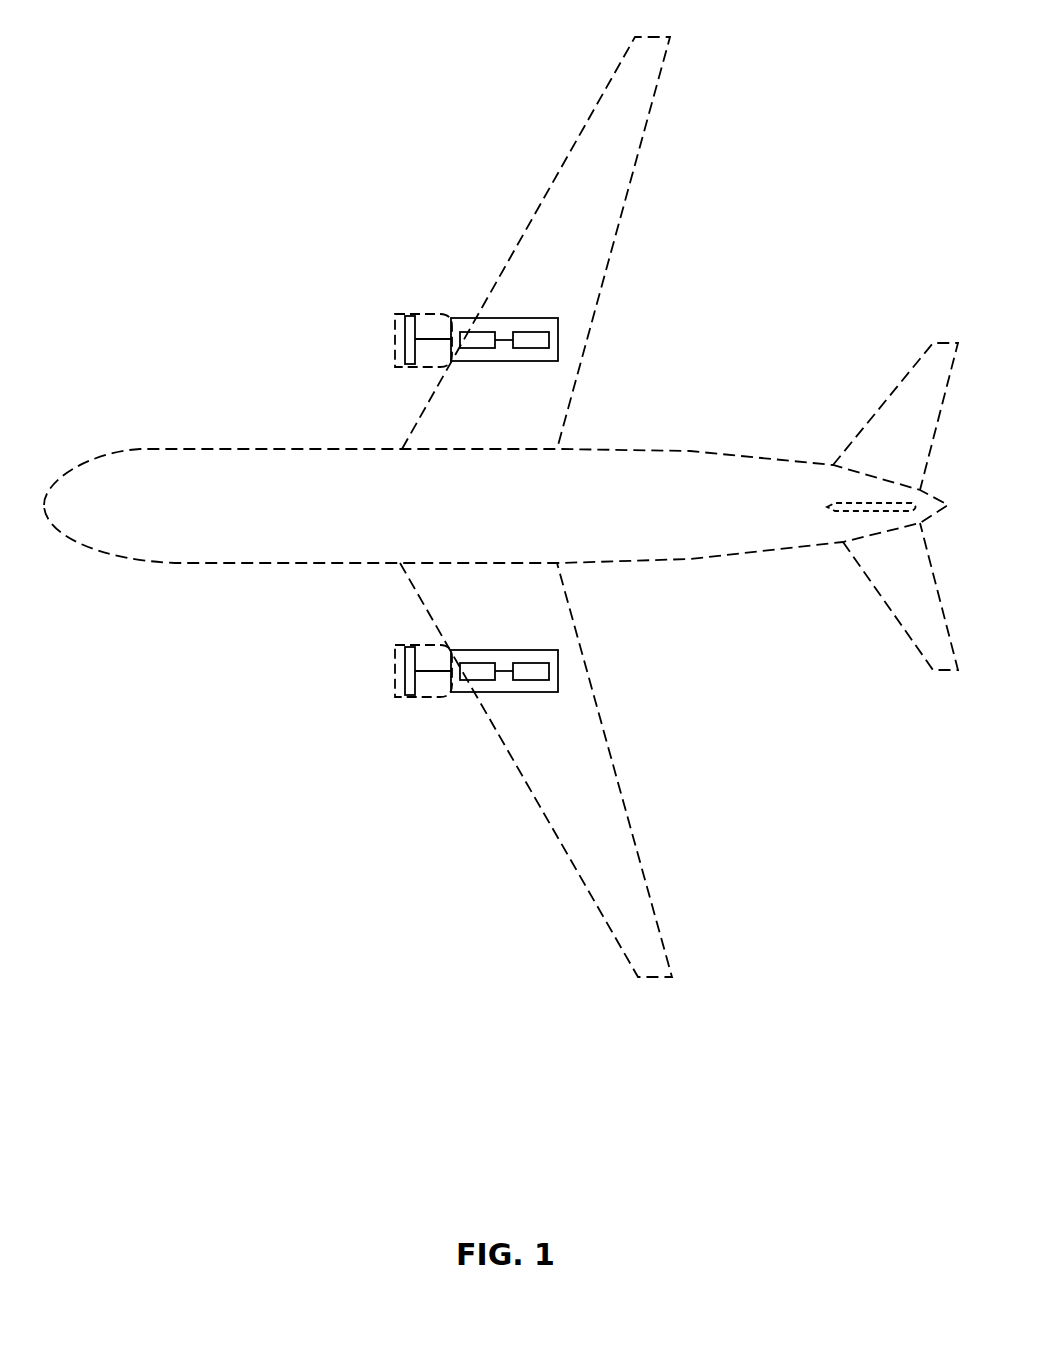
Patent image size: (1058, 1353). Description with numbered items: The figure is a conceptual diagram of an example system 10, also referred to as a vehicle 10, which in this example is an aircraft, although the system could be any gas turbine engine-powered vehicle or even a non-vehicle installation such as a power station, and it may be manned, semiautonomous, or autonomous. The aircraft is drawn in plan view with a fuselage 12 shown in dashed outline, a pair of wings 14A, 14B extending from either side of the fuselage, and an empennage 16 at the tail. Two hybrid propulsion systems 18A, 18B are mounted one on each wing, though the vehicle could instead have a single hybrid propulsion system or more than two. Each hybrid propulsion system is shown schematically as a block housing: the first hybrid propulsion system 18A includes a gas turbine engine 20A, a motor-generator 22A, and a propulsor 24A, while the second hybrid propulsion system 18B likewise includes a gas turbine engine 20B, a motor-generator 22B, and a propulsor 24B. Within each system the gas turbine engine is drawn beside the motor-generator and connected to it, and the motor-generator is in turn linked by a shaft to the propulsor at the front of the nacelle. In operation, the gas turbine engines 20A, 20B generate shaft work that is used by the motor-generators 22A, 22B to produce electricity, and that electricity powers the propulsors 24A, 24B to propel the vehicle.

The system 10 is at (808, 141).
The fuselage 12 is at (693, 452).
The wing 14A is at (583, 342).
The wing 14B is at (593, 705).
The empennage 16 is at (845, 542).
The hybrid propulsion system 18A is at (504, 323).
The hybrid propulsion system 18B is at (503, 680).
The gas turbine engine 20A is at (532, 332).
The gas turbine engine 20B is at (540, 663).
The motor-generator 22A is at (477, 332).
The motor-generator 22B is at (462, 663).
The propulsor 24A is at (410, 364).
The propulsor 24B is at (410, 697).